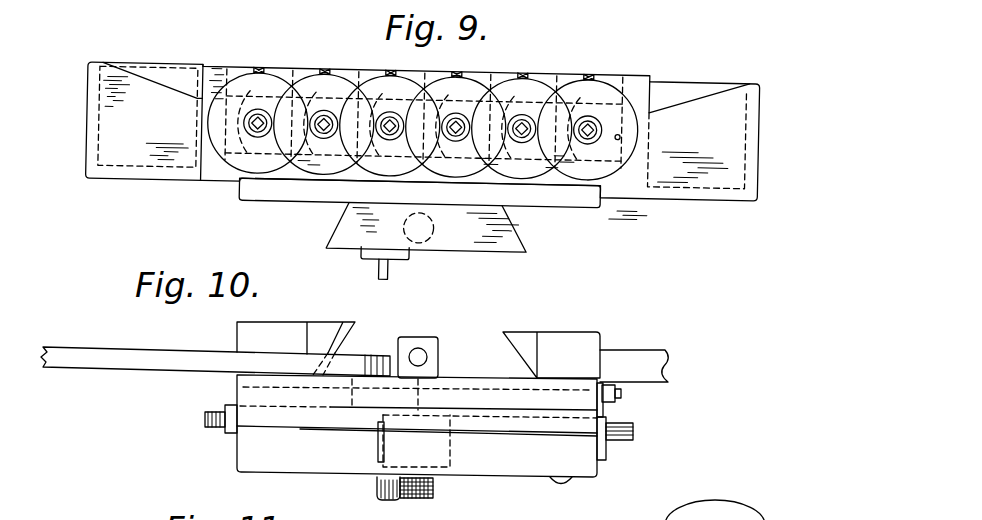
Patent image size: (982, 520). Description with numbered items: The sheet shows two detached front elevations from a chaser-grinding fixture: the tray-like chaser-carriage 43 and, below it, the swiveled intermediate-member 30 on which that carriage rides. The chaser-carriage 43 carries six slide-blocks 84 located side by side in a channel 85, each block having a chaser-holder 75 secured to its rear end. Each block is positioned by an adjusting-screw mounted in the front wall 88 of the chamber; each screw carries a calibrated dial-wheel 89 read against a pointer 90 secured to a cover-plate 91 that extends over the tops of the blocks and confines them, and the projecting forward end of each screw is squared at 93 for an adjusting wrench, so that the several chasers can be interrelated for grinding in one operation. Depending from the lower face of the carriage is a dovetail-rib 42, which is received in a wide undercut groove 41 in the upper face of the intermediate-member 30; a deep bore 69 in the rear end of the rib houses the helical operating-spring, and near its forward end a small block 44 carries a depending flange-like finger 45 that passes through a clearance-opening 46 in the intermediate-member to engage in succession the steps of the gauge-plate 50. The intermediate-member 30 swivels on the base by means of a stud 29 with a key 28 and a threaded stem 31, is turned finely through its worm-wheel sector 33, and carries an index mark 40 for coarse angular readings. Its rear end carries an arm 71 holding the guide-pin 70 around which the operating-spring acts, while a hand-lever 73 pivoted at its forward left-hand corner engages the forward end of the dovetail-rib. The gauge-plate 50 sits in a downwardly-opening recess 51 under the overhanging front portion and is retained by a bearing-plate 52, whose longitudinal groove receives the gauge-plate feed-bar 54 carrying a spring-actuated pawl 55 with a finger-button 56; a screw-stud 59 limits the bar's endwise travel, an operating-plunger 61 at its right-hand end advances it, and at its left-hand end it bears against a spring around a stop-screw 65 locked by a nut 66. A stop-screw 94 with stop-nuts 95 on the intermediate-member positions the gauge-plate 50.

In FIG. 9, the chaser-holder 75 is at (226, 66).
In FIG. 9, the front wall 88 is at (205, 100).
In FIG. 9, the calibrated dial-wheel 89 is at (313, 145).
In FIG. 9, the pointer 90 is at (330, 64).
In FIG. 9, the cover-plate 91 is at (626, 72).
In FIG. 9, the slide-block 84 is at (626, 107).
In FIG. 9, the channel 85 is at (624, 127).
In FIG. 9, the squared end 93 is at (447, 126).
In FIG. 9, the chaser-carriage 43 is at (750, 69).
In FIG. 9, the dovetail-rib 42 is at (488, 233).
In FIG. 9, the bore 69 is at (438, 228).
In FIG. 9, the block 44 is at (406, 254).
In FIG. 9, the finger 45 is at (384, 272).
In FIG. 10, the hand-lever 73 is at (160, 362).
In FIG. 10, the arm 71 is at (428, 337).
In FIG. 10, the guide-pin 70 is at (427, 357).
In FIG. 10, the undercut groove 41 is at (493, 378).
In FIG. 10, the intermediate-member 30 is at (247, 427).
In FIG. 10, the stop-nuts 95 is at (612, 383).
In FIG. 10, the worm-wheel sector 33 is at (650, 352).
In FIG. 10, the stop-screw 94 is at (621, 392).
In FIG. 10, the index mark 40 is at (537, 410).
In FIG. 10, the gauge-plate 50 is at (606, 407).
In FIG. 10, the recess 51 is at (243, 385).
In FIG. 10, the stop-screw 65 is at (205, 415).
In FIG. 10, the nut 66 is at (225, 430).
In FIG. 10, the clearance-opening 46 is at (352, 395).
In FIG. 10, the operating-plunger 61 is at (633, 435).
In FIG. 10, the gauge-plate feed-bar 54 is at (606, 458).
In FIG. 10, the bearing-plate 52 is at (270, 417).
In FIG. 10, the stud 29 is at (450, 445).
In FIG. 10, the key 28 is at (377, 453).
In FIG. 10, the threaded stem 31 is at (433, 490).
In FIG. 10, the screw-stud 59 is at (560, 485).
In FIG. 10, the pawl 55 is at (377, 498).
In FIG. 10, the finger-button 56 is at (388, 502).